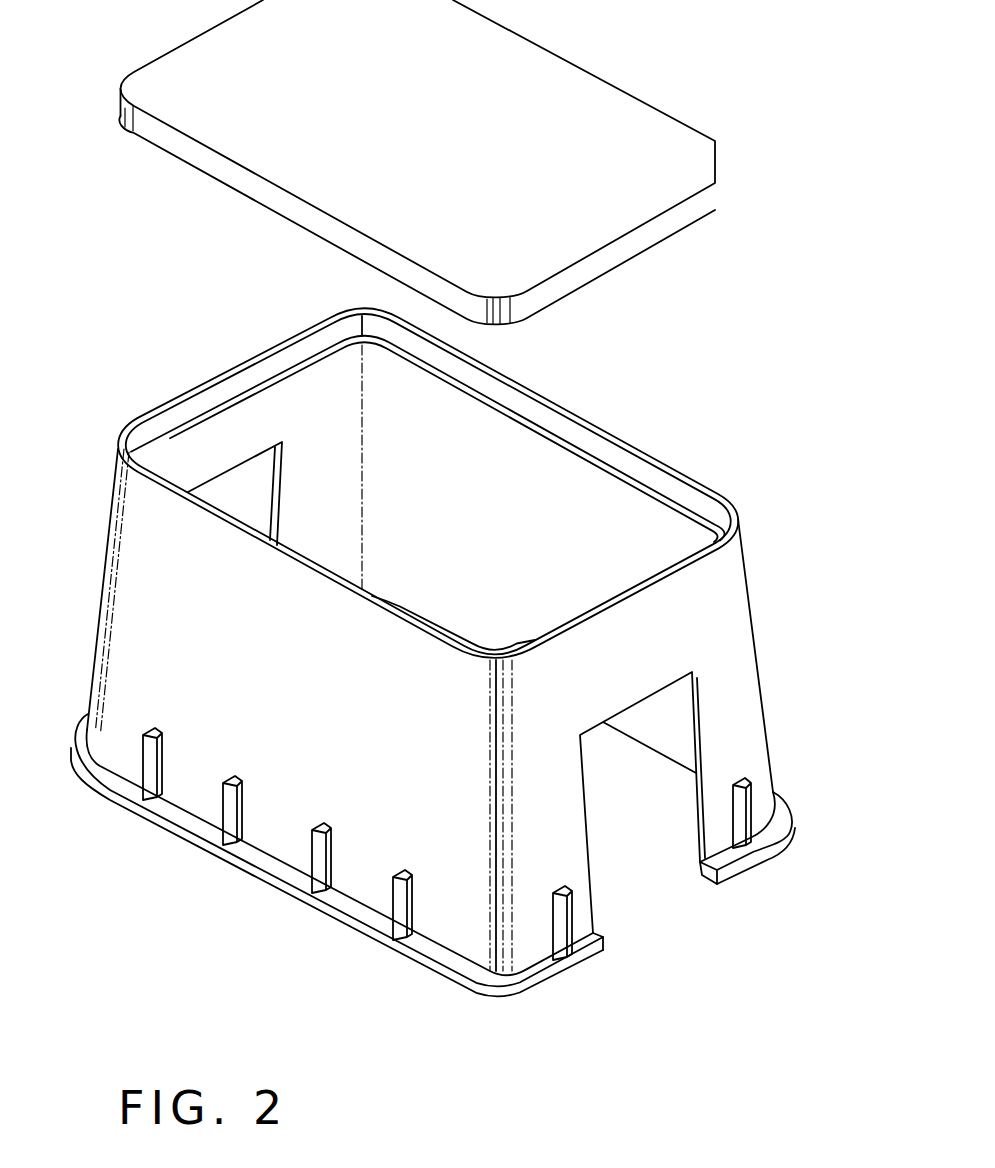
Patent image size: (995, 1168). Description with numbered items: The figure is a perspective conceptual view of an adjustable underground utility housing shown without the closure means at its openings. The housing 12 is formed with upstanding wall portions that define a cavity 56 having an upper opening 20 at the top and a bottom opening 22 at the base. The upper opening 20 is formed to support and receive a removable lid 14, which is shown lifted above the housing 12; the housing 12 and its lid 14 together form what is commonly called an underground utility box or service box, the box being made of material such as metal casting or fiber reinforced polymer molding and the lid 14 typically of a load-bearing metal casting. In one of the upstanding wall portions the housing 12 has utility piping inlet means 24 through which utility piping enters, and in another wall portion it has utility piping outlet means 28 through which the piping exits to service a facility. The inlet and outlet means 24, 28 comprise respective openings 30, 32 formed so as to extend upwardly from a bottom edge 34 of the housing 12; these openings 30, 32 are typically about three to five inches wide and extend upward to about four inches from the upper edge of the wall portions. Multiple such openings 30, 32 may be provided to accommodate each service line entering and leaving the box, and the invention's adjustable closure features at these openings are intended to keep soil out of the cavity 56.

The housing 12 is at (436, 652).
The removable lid 14 is at (552, 92).
The upper opening 20 is at (630, 523).
The bottom opening 22 is at (648, 862).
The utility piping inlet means 24 is at (723, 802).
The utility piping outlet means 28 is at (161, 438).
The opening 30 is at (650, 783).
The opening 32 is at (237, 492).
The bottom edge 34 is at (728, 632).
The cavity 56 is at (525, 517).